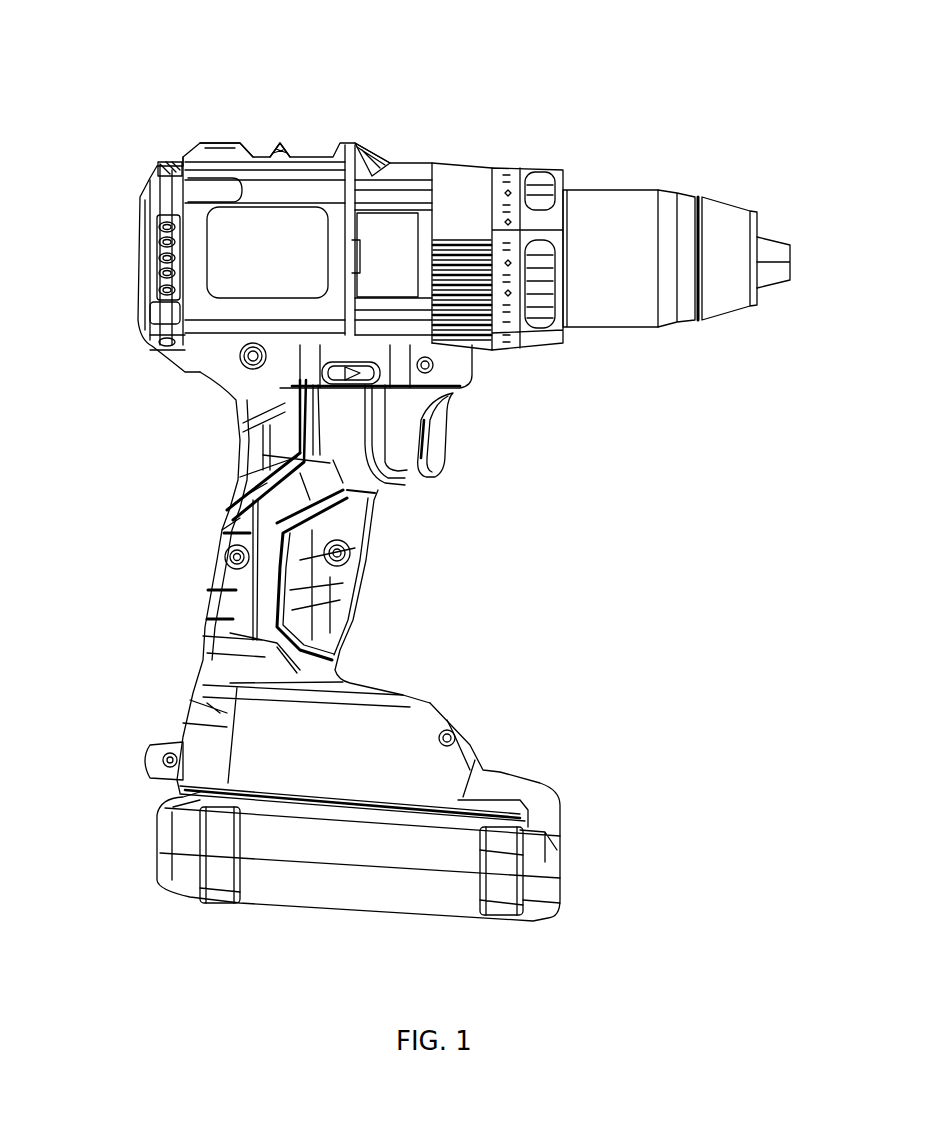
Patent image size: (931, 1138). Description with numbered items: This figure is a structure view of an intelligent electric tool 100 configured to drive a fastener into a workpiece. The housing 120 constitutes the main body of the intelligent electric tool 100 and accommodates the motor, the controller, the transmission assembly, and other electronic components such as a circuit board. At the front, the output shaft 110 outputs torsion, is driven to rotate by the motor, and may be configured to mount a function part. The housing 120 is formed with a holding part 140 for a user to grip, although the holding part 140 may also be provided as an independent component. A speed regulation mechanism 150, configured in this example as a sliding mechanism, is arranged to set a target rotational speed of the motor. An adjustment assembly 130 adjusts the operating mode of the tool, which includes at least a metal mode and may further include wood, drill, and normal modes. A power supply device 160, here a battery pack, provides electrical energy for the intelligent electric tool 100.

The intelligent electric tool 100 is at (352, 128).
The output shaft 110 is at (768, 240).
The housing 120 is at (143, 257).
The adjustment assembly 130 is at (283, 141).
The holding part 140 is at (338, 578).
The speed regulation mechanism 150 is at (428, 435).
The power supply device 160 is at (318, 902).